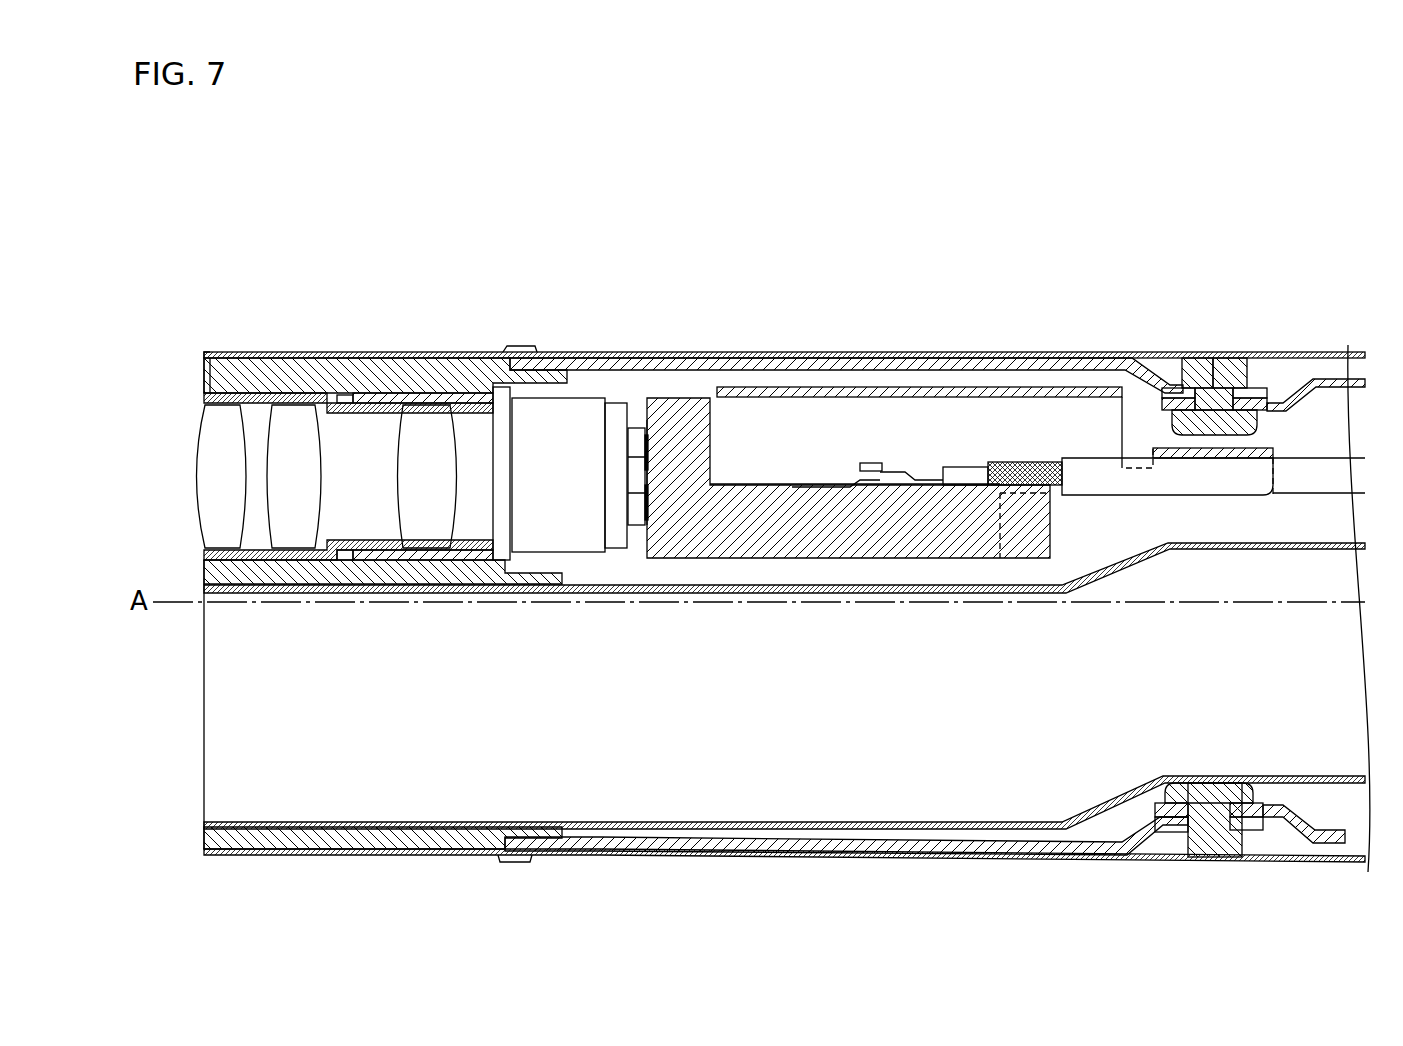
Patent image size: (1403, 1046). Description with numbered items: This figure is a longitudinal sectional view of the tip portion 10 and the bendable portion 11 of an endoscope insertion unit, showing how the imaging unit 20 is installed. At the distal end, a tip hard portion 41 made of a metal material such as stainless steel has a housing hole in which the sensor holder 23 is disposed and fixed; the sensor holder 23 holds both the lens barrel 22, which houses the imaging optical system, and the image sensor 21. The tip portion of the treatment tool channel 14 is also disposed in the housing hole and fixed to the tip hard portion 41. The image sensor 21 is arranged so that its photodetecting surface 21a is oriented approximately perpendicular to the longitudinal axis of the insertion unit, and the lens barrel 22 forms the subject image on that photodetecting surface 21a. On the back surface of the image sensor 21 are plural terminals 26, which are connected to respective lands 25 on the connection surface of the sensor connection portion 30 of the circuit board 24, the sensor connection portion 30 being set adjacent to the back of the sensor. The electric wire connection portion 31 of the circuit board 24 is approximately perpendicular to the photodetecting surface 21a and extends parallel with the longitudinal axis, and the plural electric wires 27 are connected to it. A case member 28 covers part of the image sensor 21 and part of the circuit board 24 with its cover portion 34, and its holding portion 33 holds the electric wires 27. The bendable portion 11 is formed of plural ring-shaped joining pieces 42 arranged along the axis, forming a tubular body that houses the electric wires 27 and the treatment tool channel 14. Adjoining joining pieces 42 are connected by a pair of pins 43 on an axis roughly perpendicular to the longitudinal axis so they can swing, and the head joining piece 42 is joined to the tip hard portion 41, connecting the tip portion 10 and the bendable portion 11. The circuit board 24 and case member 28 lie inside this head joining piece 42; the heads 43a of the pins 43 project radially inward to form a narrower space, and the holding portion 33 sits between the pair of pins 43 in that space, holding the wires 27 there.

The tip portion 10 is at (221, 347).
The bendable portion 11 is at (1340, 866).
The treatment tool channel 14 is at (226, 719).
The imaging unit 20 is at (312, 276).
The image sensor 21 is at (552, 428).
The photodetecting surface 21a is at (510, 470).
The lens barrel 22 is at (327, 400).
The sensor holder 23 is at (420, 388).
The circuit board 24 is at (637, 312).
The lands 25 is at (647, 418).
The terminals 26 is at (636, 437).
The electric wires 27 is at (890, 470).
The case member 28 is at (1018, 283).
The sensor connection portion 30 is at (677, 398).
The electric wire connection portion 31 is at (735, 478).
The holding portion 33 is at (1156, 439).
The cover portion 34 is at (1042, 384).
The tip hard portion 41 is at (266, 362).
The joining pieces 42 is at (797, 357).
The pins 43 is at (1232, 357).
The heads 43a is at (1205, 430).